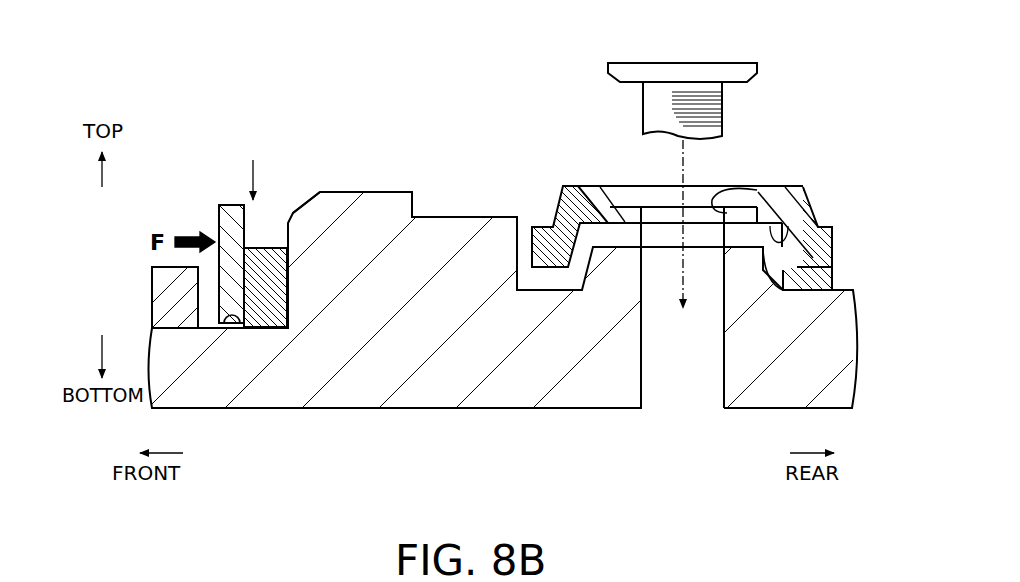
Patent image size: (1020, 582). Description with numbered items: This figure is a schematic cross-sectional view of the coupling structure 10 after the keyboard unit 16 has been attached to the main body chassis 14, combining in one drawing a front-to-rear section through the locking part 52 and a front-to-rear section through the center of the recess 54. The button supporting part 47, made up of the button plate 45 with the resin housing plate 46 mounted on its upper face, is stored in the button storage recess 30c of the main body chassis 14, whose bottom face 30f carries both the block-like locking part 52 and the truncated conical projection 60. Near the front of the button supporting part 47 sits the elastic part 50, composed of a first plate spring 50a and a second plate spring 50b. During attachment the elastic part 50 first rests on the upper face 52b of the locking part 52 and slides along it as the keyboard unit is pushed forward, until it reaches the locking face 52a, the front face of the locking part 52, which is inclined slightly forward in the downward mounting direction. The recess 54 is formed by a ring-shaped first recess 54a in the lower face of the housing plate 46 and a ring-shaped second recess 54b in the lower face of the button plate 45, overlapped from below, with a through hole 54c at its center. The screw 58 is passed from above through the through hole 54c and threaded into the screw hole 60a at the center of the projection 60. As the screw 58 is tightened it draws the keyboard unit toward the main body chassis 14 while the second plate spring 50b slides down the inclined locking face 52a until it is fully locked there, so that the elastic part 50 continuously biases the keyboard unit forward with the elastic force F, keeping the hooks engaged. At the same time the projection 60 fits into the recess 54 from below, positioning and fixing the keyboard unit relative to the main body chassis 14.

The coupling structure 10 is at (210, 196).
The main body chassis 14 is at (557, 306).
The mounting structure 16 is at (163, 53).
The button storage recess 30c is at (524, 275).
The bottom face 30f is at (238, 322).
The button plate 45 is at (546, 285).
The housing plate 46 is at (573, 213).
The button supporting part 47 is at (813, 52).
The elastic part 50 is at (256, 221).
The first plate spring 50a is at (228, 201).
The second plate spring 50b is at (261, 260).
The locking part 52 is at (557, 292).
The locking face 52a is at (272, 325).
The upper face 52b is at (372, 190).
The recess 54 is at (748, 178).
The first recess 54a is at (804, 185).
The second recess 54b is at (840, 186).
The through hole 54c is at (742, 186).
The screw 58 is at (680, 73).
The projection 60 is at (681, 292).
The screw hole 60a is at (642, 352).